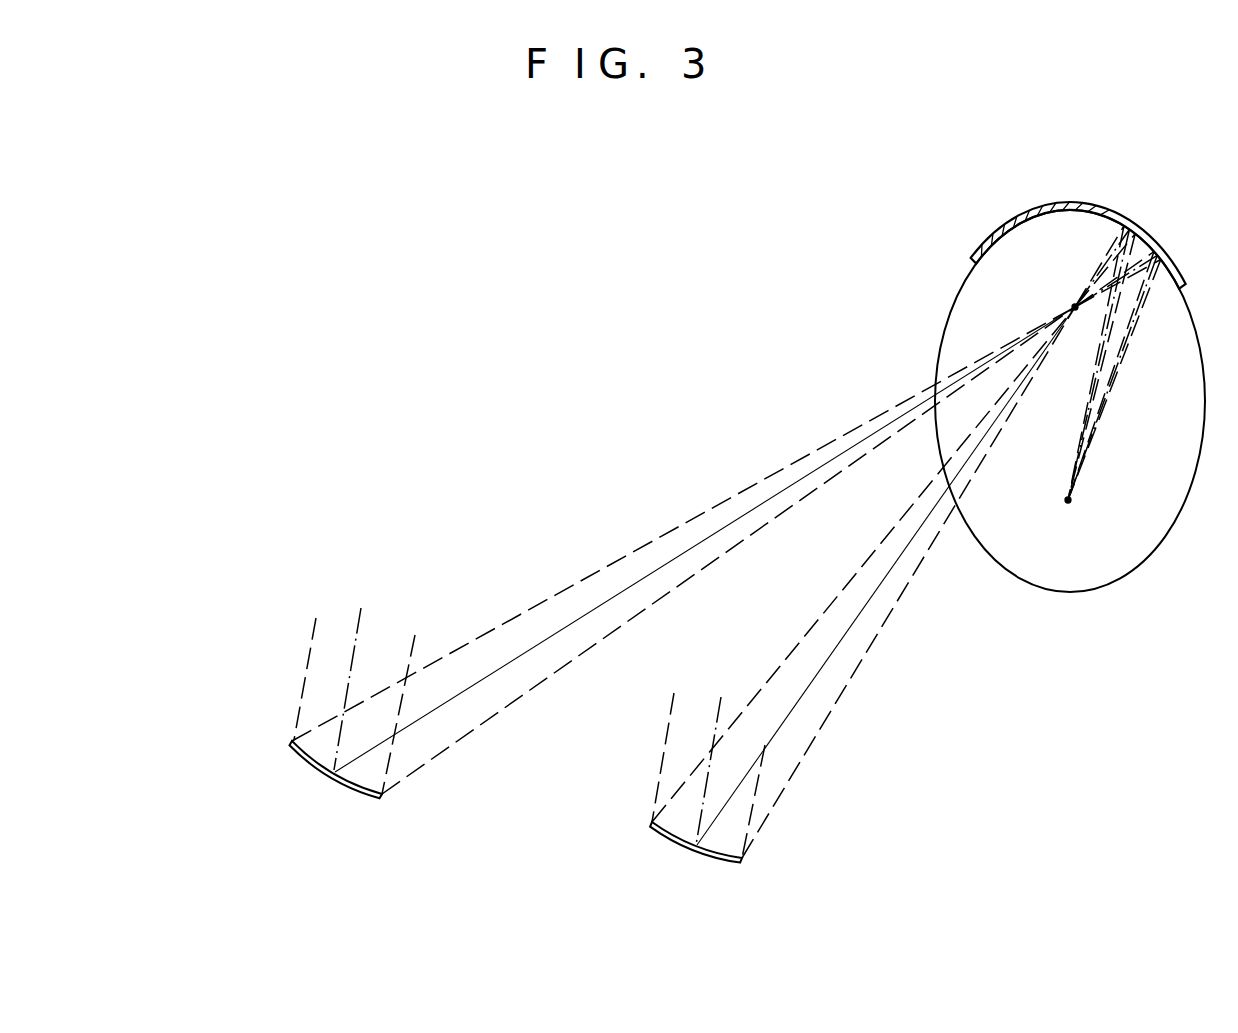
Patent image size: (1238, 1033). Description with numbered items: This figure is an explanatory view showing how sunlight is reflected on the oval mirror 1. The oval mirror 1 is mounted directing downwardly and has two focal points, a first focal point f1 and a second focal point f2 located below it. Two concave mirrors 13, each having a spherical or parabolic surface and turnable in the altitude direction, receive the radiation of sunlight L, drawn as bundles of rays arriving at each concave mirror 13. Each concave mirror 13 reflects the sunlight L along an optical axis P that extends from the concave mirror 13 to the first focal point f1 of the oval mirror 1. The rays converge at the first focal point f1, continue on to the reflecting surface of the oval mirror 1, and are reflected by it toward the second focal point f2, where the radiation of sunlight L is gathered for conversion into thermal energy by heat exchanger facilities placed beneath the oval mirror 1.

The oval mirror 1 is at (1118, 212).
The concave mirror 13 is at (360, 796).
The first focal point f1 is at (1075, 307).
The second focal point f2 is at (1068, 500).
The sunlight L is at (508, 617).
The optical axis P is at (614, 595).